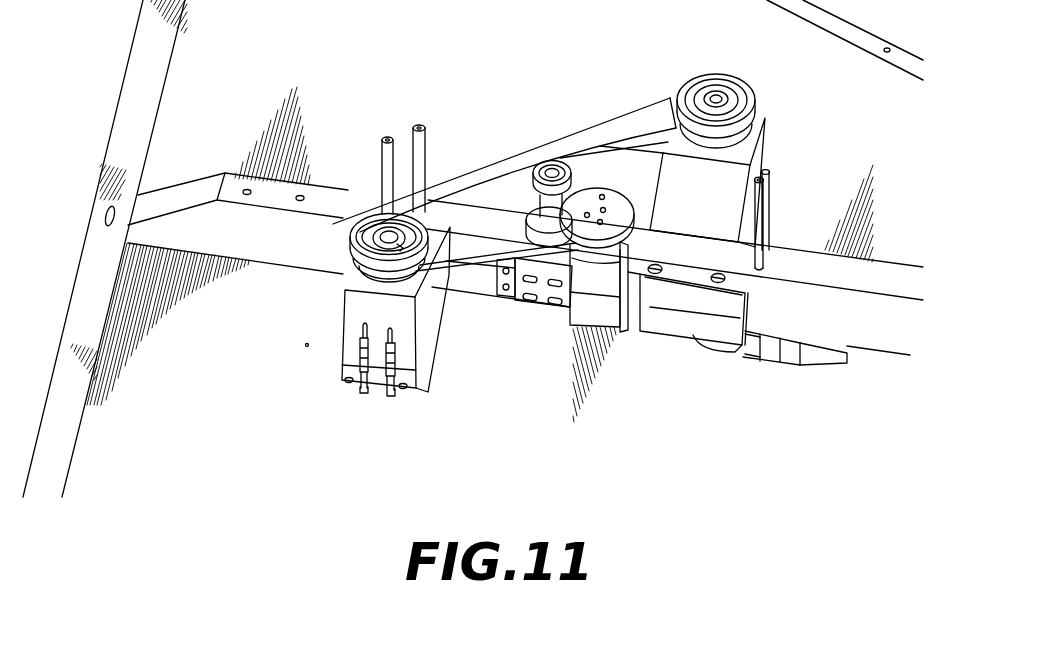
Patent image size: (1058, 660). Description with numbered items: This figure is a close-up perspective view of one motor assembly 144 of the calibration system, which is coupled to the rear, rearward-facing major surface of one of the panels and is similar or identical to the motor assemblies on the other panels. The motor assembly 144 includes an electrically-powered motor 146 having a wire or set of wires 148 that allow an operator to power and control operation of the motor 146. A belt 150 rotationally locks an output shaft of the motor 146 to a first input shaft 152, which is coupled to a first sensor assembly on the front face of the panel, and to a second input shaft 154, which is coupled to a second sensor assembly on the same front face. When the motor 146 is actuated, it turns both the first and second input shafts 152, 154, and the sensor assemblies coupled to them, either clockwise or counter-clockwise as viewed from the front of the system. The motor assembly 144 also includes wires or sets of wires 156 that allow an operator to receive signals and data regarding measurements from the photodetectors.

The motor assembly 144 is at (512, 128).
The motor 146 is at (624, 327).
The wires 148 is at (827, 358).
The belt 150 is at (607, 122).
The first input shaft 152 is at (385, 236).
The second input shaft 154 is at (713, 100).
The wires 156 is at (360, 352).